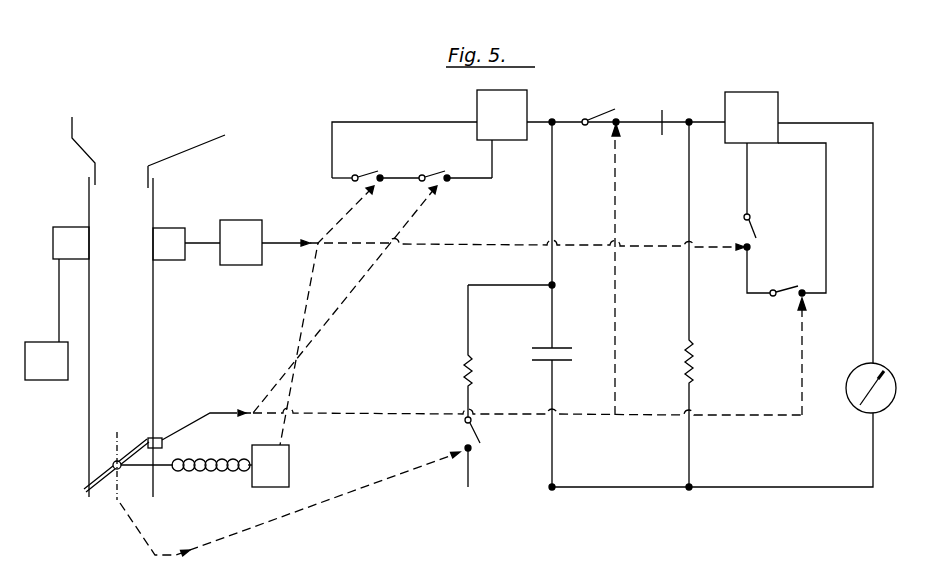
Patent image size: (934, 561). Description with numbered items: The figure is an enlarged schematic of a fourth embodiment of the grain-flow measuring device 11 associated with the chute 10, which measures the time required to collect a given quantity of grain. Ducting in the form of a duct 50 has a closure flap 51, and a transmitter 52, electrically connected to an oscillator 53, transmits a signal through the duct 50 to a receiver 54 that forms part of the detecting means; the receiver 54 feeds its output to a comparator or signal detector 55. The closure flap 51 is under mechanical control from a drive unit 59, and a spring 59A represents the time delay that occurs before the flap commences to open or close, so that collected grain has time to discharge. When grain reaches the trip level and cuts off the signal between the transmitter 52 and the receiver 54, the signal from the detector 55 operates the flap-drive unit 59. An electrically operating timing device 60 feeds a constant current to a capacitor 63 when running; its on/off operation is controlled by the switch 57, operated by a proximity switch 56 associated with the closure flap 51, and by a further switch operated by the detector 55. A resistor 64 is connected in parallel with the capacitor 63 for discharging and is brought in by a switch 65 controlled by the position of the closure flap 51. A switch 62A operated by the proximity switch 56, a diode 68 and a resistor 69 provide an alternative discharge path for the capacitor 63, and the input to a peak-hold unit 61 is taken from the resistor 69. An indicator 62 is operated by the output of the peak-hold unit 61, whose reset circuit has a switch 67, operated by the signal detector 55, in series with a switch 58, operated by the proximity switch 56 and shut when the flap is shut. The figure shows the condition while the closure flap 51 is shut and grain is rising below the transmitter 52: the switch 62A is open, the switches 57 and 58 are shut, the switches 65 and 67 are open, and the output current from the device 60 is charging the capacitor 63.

The chute 10 is at (70, 133).
The grain-flow measuring device 11 is at (162, 182).
The duct 50 is at (89, 202).
The closure flap 51 is at (94, 488).
The transmitter 52 is at (53, 236).
The oscillator 53 is at (31, 346).
The receiver 54 is at (166, 228).
The signal detector 55 is at (241, 226).
The proximity switch 56 is at (158, 437).
The switch 57 is at (372, 281).
The switch 58 is at (790, 331).
The drive unit 59 is at (284, 478).
The spring 59A is at (207, 474).
The timing device 60 is at (516, 126).
The peak-hold unit 61 is at (773, 105).
The indicator 62 is at (879, 395).
The switch 62A is at (587, 119).
The capacitor 63 is at (564, 304).
The resistor 64 is at (376, 297).
The switch 65 is at (459, 452).
The switch 67 is at (760, 196).
The diode 68 is at (655, 116).
The resistor 69 is at (703, 304).